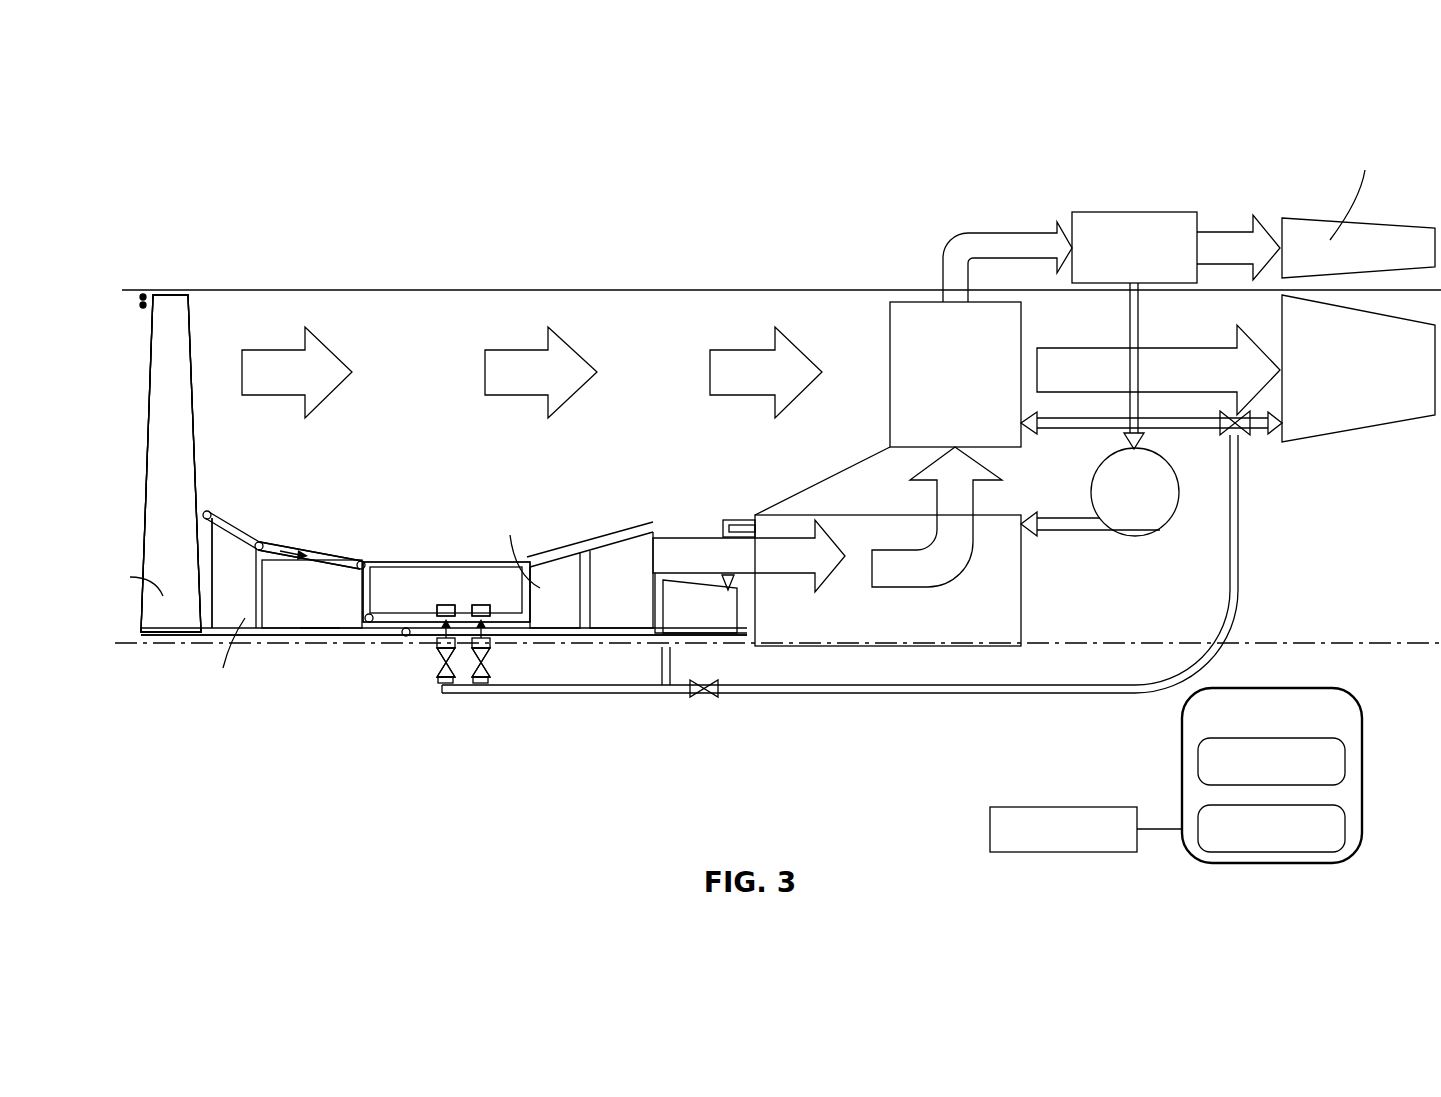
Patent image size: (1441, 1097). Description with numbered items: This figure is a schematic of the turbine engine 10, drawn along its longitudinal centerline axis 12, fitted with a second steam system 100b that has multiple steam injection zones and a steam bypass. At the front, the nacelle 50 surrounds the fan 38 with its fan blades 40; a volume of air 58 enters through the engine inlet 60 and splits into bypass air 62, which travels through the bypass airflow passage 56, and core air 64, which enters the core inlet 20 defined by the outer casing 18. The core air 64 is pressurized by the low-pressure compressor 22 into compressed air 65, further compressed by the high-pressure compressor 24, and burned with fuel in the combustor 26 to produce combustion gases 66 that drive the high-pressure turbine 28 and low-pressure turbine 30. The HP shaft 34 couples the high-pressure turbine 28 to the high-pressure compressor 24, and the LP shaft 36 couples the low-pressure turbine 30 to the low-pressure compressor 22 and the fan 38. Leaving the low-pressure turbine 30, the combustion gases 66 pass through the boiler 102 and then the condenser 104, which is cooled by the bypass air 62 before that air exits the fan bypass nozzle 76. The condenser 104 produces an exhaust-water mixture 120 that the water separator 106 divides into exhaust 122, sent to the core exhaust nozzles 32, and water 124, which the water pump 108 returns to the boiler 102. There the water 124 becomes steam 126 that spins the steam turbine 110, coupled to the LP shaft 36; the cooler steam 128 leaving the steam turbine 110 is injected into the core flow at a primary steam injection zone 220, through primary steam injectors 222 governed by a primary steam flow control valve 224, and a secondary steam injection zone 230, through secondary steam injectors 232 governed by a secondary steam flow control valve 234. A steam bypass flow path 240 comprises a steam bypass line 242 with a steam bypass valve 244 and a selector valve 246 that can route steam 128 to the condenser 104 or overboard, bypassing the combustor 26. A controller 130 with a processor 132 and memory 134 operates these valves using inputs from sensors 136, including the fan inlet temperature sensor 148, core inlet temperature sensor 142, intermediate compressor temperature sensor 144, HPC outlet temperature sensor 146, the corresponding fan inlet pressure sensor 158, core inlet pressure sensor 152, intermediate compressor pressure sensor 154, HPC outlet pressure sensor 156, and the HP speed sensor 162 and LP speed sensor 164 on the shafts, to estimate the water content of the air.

The turbine engine 10 is at (181, 246).
The longitudinal centerline axis 12 is at (1093, 658).
The outer casing 18 is at (452, 562).
The core inlet 20 is at (209, 447).
The low-pressure compressor 22 is at (237, 530).
The high-pressure compressor 24 is at (330, 556).
The combustor 26 is at (375, 573).
The high-pressure turbine 28 is at (565, 560).
The low-pressure turbine 30 is at (627, 540).
The core exhaust nozzles 32 is at (1404, 226).
The HP shaft 34 is at (385, 625).
The LP shaft 36 is at (300, 636).
The fan 38 is at (140, 436).
The fan blades 40 is at (151, 330).
The nacelle 50 is at (390, 289).
The bypass airflow passage 56 is at (703, 304).
The volume of air 58 is at (140, 377).
The engine inlet 60 is at (136, 478).
The bypass air 62 is at (517, 397).
The core air 64 is at (297, 551).
The compressed air 65 is at (310, 555).
The combustion gases 66 is at (697, 536).
The fan bypass nozzle 76 is at (1388, 430).
The second steam system 100b is at (829, 135).
The boiler 102 is at (880, 648).
The condenser 104 is at (908, 302).
The water separator 106 is at (1135, 212).
The water pump 108 is at (1181, 496).
The steam turbine 110 is at (720, 591).
The exhaust-water mixture 120 is at (975, 235).
The exhaust 122 is at (1240, 230).
The water 124 is at (1139, 346).
The steam 126 is at (725, 520).
The steam 128 is at (615, 696).
The controller 130 is at (1362, 722).
The processor 132 is at (1345, 765).
The memory 134 is at (1345, 830).
The sensors 136 is at (1065, 807).
The core inlet temperature sensor 142 is at (210, 512).
The intermediate compressor temperature sensor 144 is at (263, 543).
The HPC outlet temperature sensor 146 is at (363, 560).
The fan inlet temperature sensor 148 is at (140, 304).
The core inlet pressure sensor 152 is at (198, 565).
The intermediate compressor pressure sensor 154 is at (208, 562).
The HPC outlet pressure sensor 156 is at (327, 630).
The fan inlet pressure sensor 158 is at (140, 297).
The HP speed sensor 162 is at (367, 621).
The LP speed sensor 164 is at (408, 628).
The primary steam injection zone 220 is at (450, 726).
The primary steam injectors 222 is at (437, 613).
The primary steam flow control valve 224 is at (435, 666).
The secondary steam injection zone 230 is at (484, 712).
The secondary steam injectors 232 is at (492, 611).
The secondary steam flow control valve 234 is at (492, 666).
The steam bypass flow path 240 is at (948, 806).
The steam bypass line 242 is at (985, 695).
The steam bypass valve 244 is at (713, 698).
The selector valve 246 is at (1249, 433).